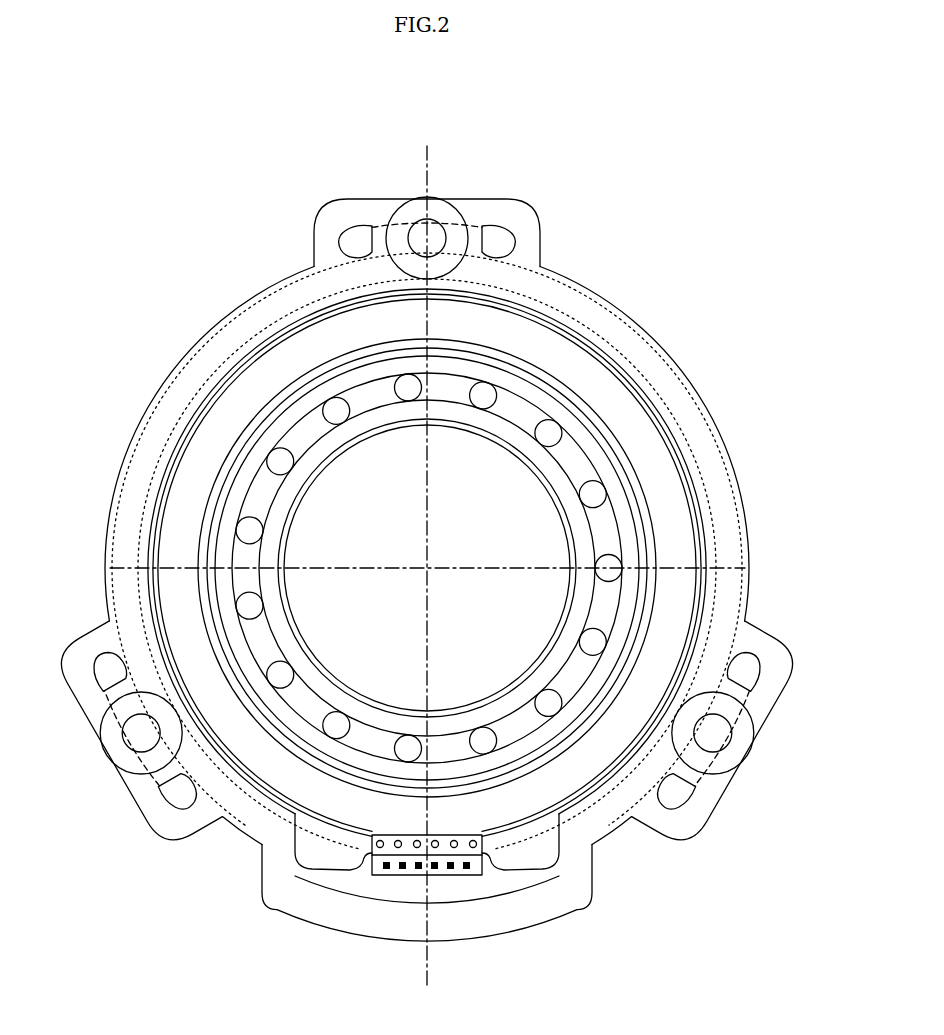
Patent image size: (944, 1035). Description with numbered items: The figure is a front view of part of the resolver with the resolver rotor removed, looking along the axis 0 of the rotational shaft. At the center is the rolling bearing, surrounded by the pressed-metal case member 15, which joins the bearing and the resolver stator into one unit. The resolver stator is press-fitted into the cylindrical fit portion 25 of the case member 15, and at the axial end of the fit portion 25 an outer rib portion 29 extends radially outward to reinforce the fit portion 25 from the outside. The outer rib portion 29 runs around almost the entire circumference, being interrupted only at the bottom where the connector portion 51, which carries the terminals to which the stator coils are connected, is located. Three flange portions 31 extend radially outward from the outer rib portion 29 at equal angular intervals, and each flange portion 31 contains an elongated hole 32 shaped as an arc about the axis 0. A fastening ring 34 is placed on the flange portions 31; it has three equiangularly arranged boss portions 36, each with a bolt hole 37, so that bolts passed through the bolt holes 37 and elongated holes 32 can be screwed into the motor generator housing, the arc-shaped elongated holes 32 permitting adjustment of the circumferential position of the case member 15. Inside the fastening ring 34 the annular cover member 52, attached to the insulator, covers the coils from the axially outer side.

The axis 0 is at (427, 568).
The case member 15 is at (532, 211).
The fit portion 25 is at (523, 843).
The outer rib portion 29 is at (320, 857).
The flange portion 31 is at (350, 200).
The elongated hole 32 is at (98, 672).
The fastening ring 34 is at (237, 830).
The boss portion 36 is at (447, 215).
The bolt hole 37 is at (130, 740).
The connector portion 51 is at (393, 875).
The cover member 52 is at (575, 777).